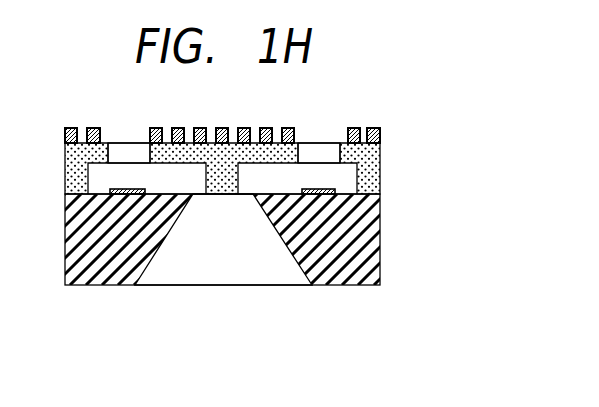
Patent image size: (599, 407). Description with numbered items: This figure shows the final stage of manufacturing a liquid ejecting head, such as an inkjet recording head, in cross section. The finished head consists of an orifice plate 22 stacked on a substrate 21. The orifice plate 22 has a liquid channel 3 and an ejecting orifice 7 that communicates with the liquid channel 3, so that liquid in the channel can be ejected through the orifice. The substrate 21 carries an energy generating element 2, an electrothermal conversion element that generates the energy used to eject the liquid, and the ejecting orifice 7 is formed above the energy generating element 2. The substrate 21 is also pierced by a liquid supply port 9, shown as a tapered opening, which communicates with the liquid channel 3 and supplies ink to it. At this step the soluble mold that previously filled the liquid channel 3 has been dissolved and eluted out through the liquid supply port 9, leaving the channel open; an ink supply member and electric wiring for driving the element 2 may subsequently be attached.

The orifice plate 22 is at (219, 137).
The liquid channel 3 is at (380, 170).
The ejecting orifice 7 is at (132, 148).
The energy generating element 2 is at (320, 198).
The substrate 21 is at (347, 247).
The liquid supply port 9 is at (222, 260).